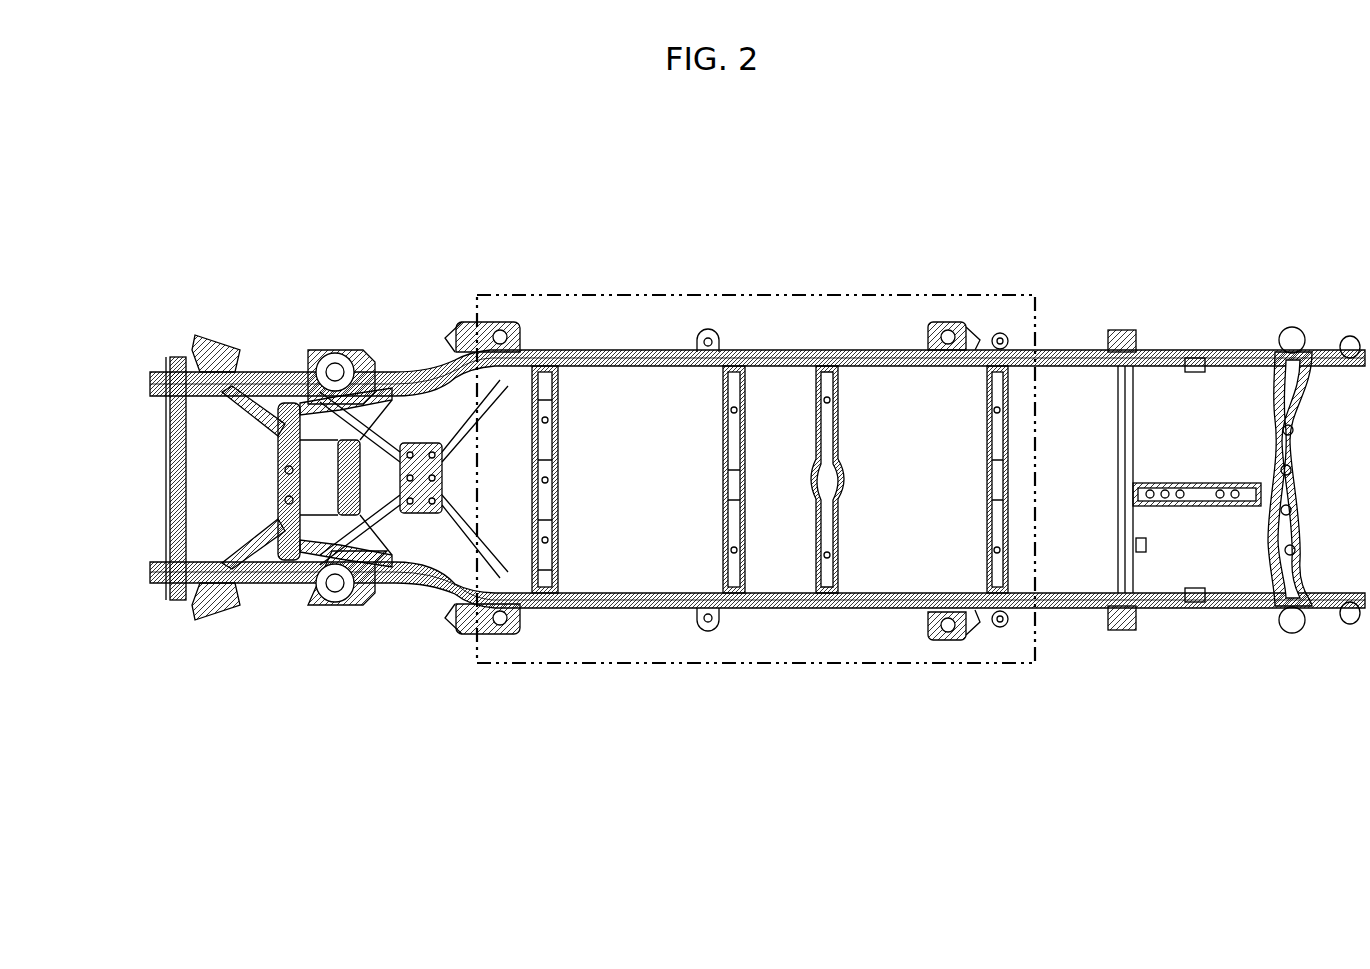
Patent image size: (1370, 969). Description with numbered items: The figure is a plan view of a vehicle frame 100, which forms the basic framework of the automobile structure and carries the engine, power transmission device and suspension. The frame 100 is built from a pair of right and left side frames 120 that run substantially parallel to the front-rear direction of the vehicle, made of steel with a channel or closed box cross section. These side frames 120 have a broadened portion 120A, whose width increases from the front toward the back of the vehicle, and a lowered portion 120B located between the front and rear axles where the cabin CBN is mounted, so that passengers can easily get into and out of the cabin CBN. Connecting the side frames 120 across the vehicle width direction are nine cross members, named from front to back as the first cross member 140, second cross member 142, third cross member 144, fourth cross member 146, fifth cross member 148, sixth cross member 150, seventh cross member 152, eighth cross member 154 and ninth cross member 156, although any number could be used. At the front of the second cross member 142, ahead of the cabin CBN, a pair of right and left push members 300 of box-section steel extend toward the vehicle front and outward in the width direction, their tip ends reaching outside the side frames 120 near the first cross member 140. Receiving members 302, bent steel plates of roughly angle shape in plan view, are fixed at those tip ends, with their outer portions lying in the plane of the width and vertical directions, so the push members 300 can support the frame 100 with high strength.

The frame 100 is at (757, 345).
The side frames 120 is at (633, 350).
The broadened portion 120A is at (420, 372).
The lowered portion 120B is at (845, 350).
The first cross member 140 is at (170, 455).
The second cross member 142 is at (280, 468).
The third cross member 144 is at (418, 432).
The fourth cross member 146 is at (560, 452).
The fifth cross member 148 is at (723, 530).
The sixth cross member 150 is at (838, 442).
The seventh cross member 152 is at (985, 522).
The eighth cross member 154 is at (1133, 440).
The ninth cross member 156 is at (1283, 566).
The push members 300 is at (213, 350).
The receiving members 302 is at (197, 350).
The cabin CBN is at (1013, 295).